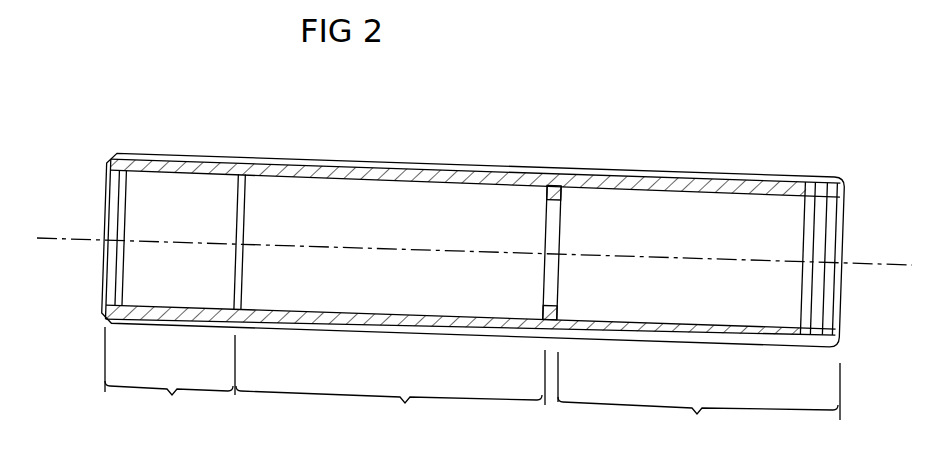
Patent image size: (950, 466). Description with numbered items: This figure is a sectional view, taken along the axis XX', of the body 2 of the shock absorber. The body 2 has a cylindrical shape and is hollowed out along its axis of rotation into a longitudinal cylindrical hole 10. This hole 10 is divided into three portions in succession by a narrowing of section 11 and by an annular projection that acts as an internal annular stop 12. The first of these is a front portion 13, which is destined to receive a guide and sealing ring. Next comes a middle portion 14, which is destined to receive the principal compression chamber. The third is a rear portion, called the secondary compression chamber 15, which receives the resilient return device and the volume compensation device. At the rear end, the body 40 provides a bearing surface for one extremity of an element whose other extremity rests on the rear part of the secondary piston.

The body 2 is at (458, 141).
The longitudinal cylindrical hole 10 is at (474, 174).
The narrowing of section 11 is at (236, 181).
The internal annular stop 12 is at (558, 195).
The front portion 13 is at (170, 380).
The middle portion 14 is at (390, 396).
The secondary compression chamber 15 is at (699, 402).
The body 40 is at (802, 262).